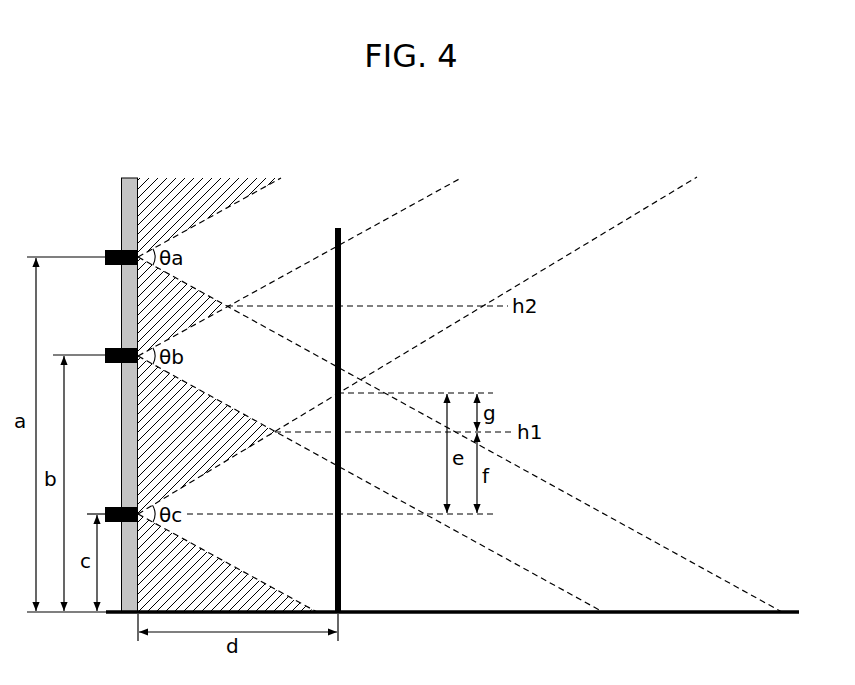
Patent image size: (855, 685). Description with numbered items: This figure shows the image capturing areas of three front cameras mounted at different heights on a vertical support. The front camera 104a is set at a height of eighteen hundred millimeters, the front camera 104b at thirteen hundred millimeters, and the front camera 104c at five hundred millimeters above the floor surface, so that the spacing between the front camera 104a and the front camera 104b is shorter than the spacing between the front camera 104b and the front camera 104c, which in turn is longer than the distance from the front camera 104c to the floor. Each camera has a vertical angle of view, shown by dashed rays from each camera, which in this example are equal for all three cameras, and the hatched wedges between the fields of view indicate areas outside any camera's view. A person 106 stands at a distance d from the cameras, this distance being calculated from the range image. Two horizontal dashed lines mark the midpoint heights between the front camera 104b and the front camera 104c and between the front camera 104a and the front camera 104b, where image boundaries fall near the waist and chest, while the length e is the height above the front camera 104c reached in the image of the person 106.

The front camera 104a is at (105, 250).
The front camera 104b is at (105, 348).
The front camera 104c is at (105, 507).
The person 106 is at (338, 228).